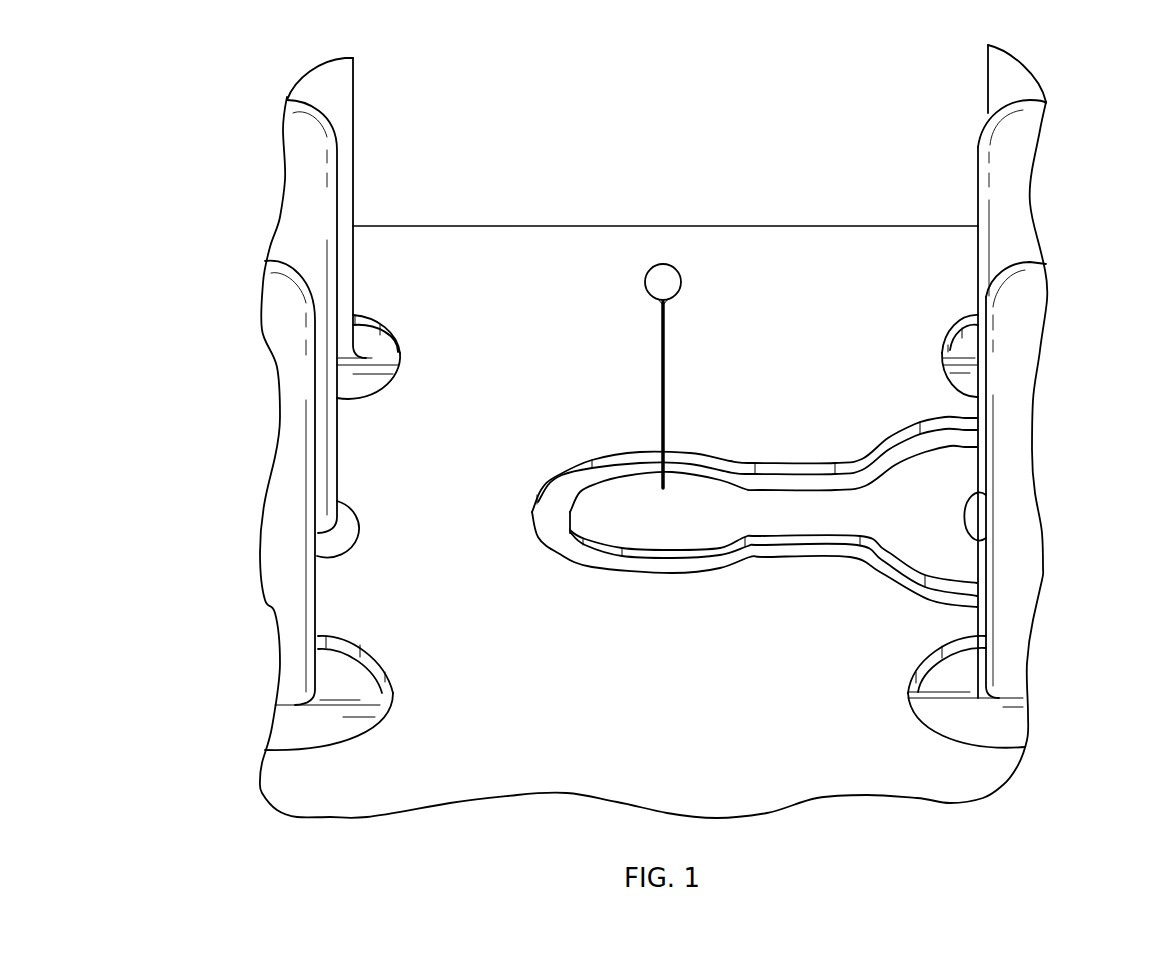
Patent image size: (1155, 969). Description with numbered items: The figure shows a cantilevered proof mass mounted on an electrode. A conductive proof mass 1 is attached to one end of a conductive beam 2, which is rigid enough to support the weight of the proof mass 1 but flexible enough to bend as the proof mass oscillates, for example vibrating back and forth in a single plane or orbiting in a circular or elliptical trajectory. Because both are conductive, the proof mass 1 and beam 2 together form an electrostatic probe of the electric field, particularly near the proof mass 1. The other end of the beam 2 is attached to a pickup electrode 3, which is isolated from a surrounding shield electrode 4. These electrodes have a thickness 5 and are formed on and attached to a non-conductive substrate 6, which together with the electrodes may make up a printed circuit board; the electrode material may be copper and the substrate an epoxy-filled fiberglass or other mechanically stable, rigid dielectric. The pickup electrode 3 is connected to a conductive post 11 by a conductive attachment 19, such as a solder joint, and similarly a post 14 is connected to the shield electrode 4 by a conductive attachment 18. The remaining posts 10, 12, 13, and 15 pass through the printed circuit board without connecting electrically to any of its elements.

The conductive proof mass 1 is at (668, 277).
The conductive beam 2 is at (661, 405).
The pickup electrode 3 is at (637, 488).
The shield electrode 4 is at (432, 237).
The thickness 5 is at (377, 332).
The non-conductive substrate 6 is at (355, 383).
The post 10 is at (1018, 313).
The conductive post 11 is at (1020, 140).
The post 12 is at (1012, 73).
The post 13 is at (287, 312).
The post 14 is at (303, 162).
The post 15 is at (325, 80).
The conductive attachment 18 is at (342, 530).
The conductive attachment 19 is at (968, 512).